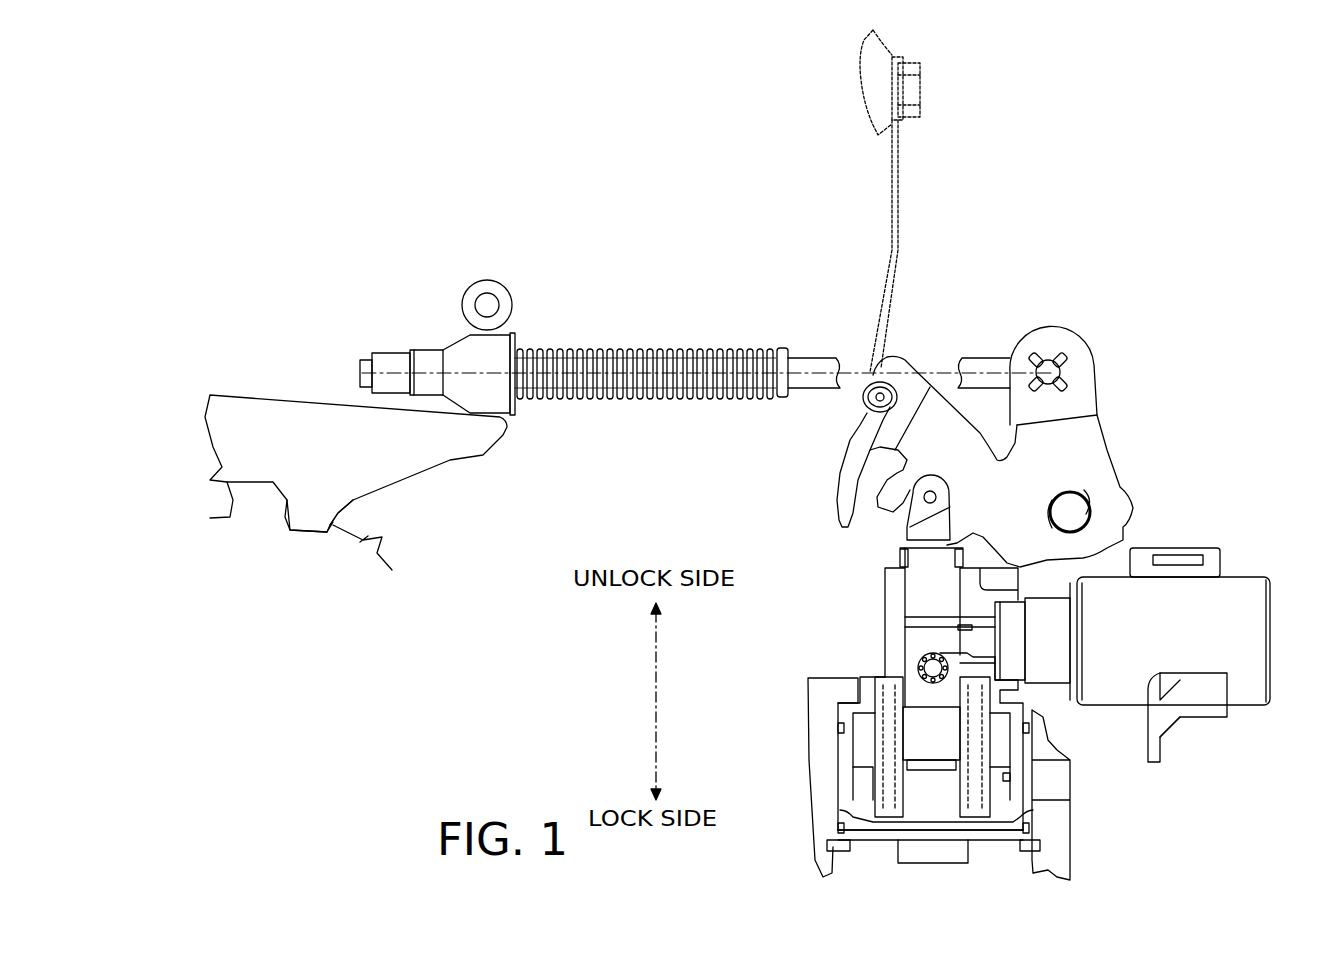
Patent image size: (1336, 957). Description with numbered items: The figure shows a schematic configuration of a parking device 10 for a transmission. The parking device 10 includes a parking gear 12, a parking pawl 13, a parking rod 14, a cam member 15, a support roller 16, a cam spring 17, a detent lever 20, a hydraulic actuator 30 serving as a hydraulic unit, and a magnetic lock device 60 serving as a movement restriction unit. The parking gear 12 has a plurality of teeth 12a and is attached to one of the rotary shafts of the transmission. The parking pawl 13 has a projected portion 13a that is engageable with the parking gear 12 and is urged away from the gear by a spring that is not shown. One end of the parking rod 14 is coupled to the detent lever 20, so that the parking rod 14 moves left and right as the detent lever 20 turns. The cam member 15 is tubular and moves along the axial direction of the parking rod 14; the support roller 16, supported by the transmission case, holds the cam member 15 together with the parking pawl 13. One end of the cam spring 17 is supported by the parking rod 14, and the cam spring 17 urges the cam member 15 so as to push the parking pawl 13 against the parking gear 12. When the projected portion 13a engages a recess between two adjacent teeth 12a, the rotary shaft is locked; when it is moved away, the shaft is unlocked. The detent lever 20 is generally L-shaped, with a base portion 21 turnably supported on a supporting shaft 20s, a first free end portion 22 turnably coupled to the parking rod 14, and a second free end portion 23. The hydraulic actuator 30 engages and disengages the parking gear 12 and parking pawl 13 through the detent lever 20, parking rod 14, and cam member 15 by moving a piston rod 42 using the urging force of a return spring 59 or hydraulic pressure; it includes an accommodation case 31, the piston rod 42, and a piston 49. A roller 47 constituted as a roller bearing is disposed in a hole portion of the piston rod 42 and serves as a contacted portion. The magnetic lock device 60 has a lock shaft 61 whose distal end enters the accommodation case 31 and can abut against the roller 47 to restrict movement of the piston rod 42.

The parking device 10 is at (1081, 125).
The parking gear 12 is at (400, 556).
The teeth 12a is at (380, 540).
The parking pawl 13 is at (255, 417).
The projected portion 13a is at (307, 517).
The parking rod 14 is at (973, 367).
The cam member 15 is at (520, 409).
The support roller 16 is at (500, 290).
The cam spring 17 is at (667, 353).
The detent lever 20 is at (1127, 467).
The supporting shaft 20s is at (1082, 503).
The base portion 21 is at (1100, 453).
The first free end portion 22 is at (1090, 400).
The second free end portion 23 is at (923, 468).
The hydraulic actuator 30 is at (876, 600).
The accommodation case 31 is at (878, 672).
The piston rod 42 is at (920, 747).
The roller 47 is at (922, 660).
The piston 49 is at (868, 813).
The return spring 59 is at (885, 787).
The magnetic lock device 60 is at (1236, 546).
The lock shaft 61 is at (967, 640).